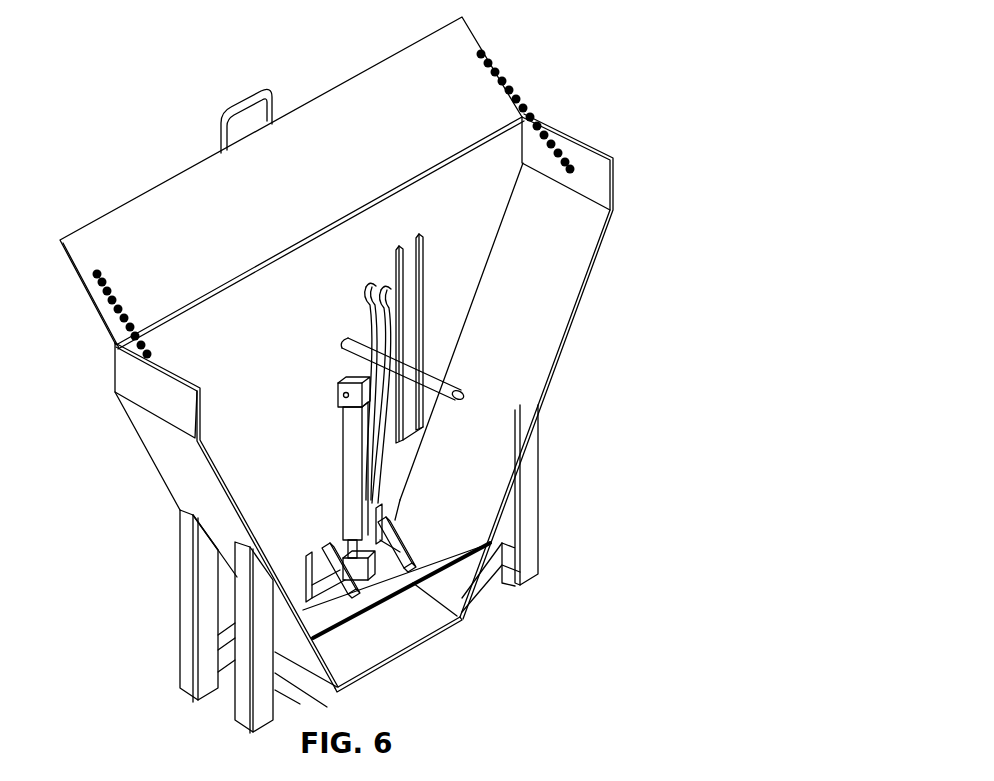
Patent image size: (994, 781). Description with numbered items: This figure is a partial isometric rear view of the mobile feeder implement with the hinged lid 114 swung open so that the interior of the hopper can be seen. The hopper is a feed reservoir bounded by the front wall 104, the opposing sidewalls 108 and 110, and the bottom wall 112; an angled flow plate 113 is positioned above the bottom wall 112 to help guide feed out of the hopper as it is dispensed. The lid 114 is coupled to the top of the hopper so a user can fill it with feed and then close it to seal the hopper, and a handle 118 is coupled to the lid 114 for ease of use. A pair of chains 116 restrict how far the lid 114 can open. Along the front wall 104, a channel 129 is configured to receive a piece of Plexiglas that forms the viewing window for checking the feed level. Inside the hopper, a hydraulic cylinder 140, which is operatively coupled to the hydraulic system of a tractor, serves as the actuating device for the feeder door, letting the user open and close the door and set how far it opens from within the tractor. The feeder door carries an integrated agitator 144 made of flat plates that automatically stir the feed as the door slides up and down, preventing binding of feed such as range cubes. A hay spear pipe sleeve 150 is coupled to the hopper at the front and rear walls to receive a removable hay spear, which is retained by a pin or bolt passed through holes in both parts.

The front wall 104 is at (170, 330).
The sidewall 108 is at (162, 455).
The sidewall 110 is at (538, 352).
The bottom wall 112 is at (412, 630).
The angled flow plate 113 is at (433, 560).
The hinged lid 114 is at (467, 25).
The chains 116 is at (515, 83).
The handle 118 is at (243, 98).
The channel 129 is at (422, 257).
The hydraulic cylinder 140 is at (352, 468).
The agitator 144 is at (418, 525).
The hay spear pipe sleeve 150 is at (350, 338).